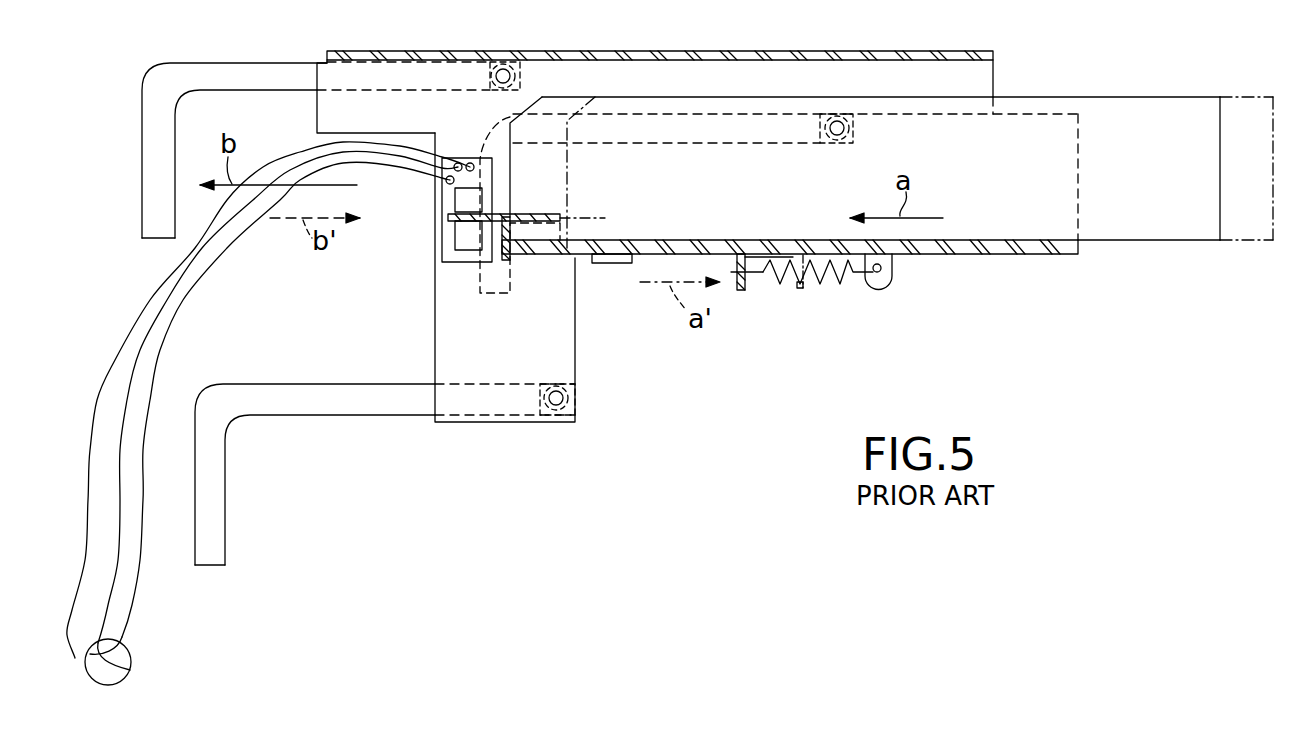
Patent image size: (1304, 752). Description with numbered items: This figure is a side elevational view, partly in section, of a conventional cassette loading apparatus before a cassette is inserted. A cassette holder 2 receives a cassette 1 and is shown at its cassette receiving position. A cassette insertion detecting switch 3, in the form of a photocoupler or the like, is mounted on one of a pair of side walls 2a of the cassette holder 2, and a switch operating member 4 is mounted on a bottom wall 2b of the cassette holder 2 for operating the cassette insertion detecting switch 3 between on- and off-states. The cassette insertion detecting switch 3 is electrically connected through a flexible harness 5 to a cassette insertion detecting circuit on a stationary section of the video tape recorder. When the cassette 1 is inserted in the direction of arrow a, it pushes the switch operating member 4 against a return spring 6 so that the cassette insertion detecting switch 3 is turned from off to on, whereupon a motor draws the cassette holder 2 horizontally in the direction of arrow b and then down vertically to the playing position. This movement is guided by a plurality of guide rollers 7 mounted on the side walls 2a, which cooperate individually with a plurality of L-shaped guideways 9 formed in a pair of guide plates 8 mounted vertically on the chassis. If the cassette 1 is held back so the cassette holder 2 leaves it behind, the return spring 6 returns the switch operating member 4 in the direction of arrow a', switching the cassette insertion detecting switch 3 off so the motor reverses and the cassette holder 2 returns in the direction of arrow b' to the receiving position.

The cassette 1 is at (1188, 100).
The cassette holder 2 is at (796, 47).
The side wall 2a is at (482, 412).
The bottom wall 2b is at (962, 254).
The cassette insertion detecting switch 3 is at (463, 197).
The switch operating member 4 is at (432, 230).
The flexible harness 5 is at (167, 338).
The return spring 6 is at (822, 285).
The guide roller 7 is at (501, 63).
The guide plate 8 is at (692, 436).
The L-shaped guideway 9 is at (244, 66).